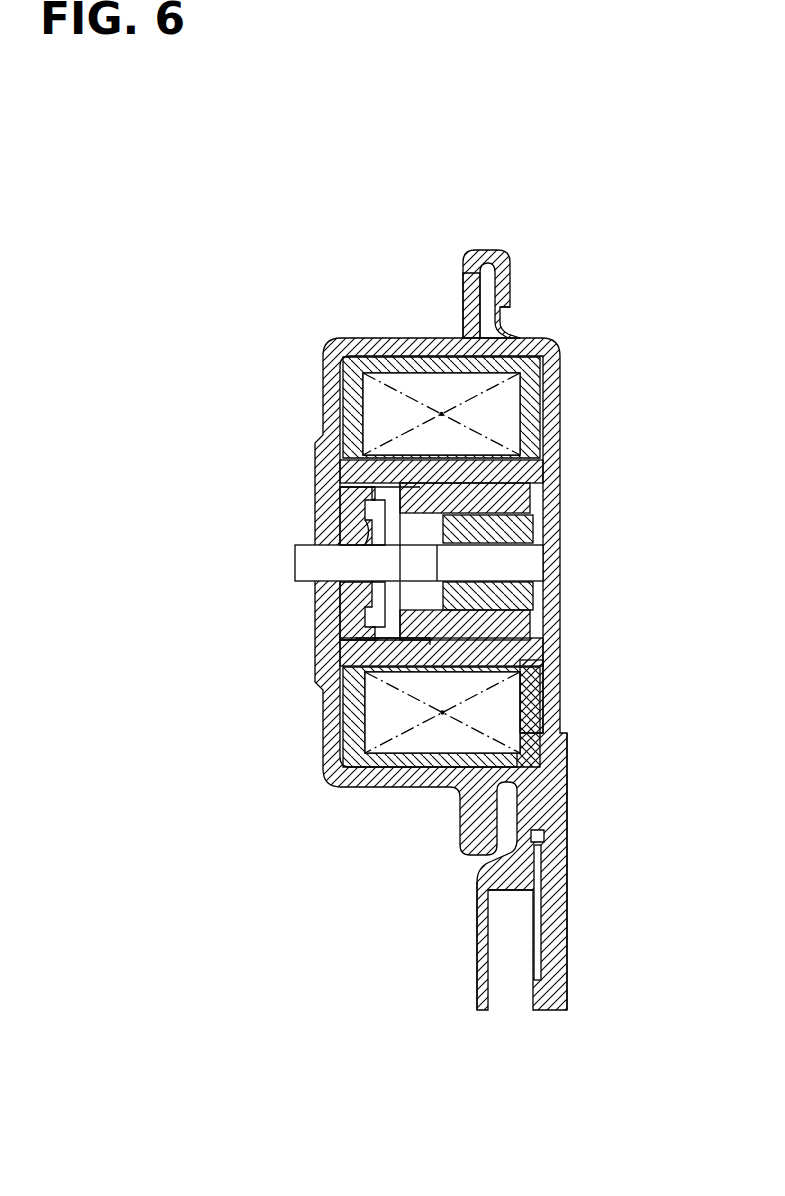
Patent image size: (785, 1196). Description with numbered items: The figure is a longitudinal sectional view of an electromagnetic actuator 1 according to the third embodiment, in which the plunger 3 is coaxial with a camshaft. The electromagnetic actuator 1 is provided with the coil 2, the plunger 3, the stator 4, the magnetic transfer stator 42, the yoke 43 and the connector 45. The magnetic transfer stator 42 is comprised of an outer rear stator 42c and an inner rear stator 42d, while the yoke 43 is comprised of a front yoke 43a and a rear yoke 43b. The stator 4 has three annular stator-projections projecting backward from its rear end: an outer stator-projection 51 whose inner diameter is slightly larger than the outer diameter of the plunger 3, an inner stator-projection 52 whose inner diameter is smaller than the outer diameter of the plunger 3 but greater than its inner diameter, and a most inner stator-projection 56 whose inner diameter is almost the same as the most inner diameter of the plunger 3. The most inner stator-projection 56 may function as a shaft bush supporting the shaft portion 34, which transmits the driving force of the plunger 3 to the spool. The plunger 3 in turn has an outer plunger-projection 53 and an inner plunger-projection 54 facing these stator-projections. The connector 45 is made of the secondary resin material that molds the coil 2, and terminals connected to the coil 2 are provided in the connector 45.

The electromagnetic actuator 1 is at (281, 361).
The coil 2 is at (407, 380).
The plunger 3 is at (363, 690).
The stator 4 is at (322, 462).
The shaft portion 34 is at (310, 565).
The magnetic transfer stator 42 is at (514, 596).
The outer rear stator 42c is at (517, 470).
The inner rear stator 42d is at (535, 522).
The yoke 43 is at (486, 248).
The front yoke 43a is at (443, 334).
The rear yoke 43b is at (520, 338).
The connector 45 is at (473, 965).
The outer stator-projection 51 is at (387, 489).
The inner stator-projection 52 is at (345, 496).
The outer plunger-projection 53 is at (430, 630).
The inner plunger-projection 54 is at (400, 593).
The most inner stator-projection 56 is at (330, 528).